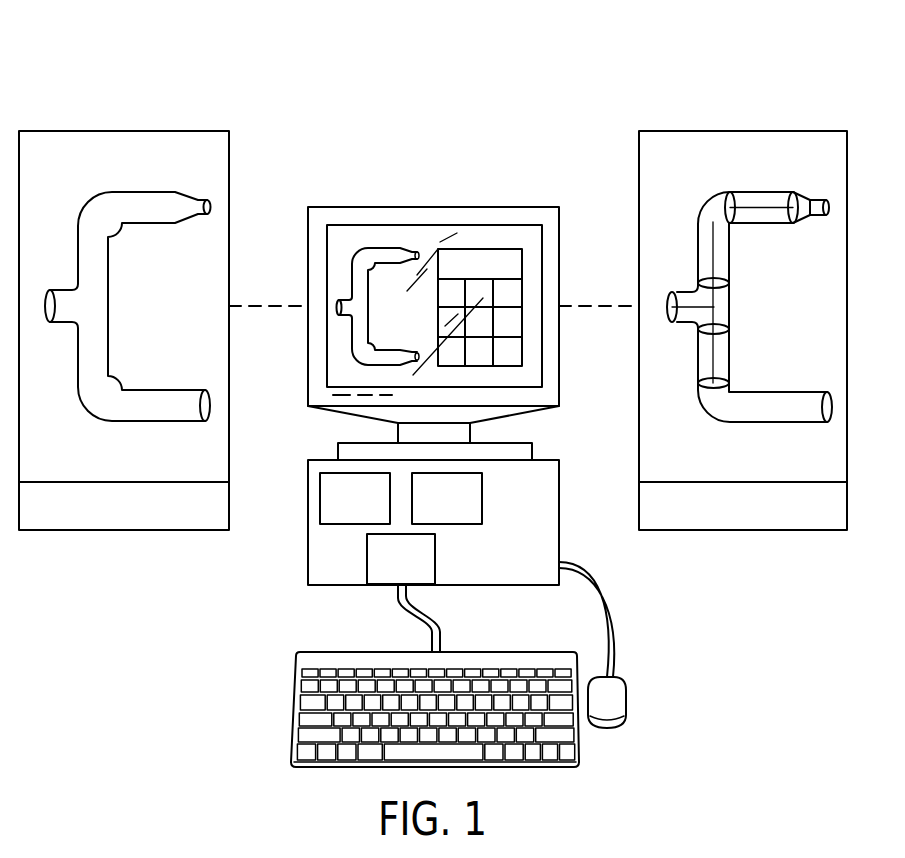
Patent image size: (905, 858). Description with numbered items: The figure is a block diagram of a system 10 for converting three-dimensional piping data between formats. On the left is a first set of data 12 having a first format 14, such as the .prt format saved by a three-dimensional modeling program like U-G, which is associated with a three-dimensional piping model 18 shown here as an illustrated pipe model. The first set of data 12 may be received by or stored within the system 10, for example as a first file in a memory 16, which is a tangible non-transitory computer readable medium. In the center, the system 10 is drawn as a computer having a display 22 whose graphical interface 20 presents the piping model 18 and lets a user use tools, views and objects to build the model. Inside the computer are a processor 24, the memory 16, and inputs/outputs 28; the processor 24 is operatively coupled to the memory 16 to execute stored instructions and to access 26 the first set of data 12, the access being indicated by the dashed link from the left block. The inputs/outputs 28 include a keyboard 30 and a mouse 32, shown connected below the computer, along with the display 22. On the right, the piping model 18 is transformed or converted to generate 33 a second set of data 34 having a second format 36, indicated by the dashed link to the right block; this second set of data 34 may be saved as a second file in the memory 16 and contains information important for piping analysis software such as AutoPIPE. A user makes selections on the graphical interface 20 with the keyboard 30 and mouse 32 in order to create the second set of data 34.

The system 10 is at (467, 431).
The first set of data 12 is at (152, 295).
The first format 14 is at (48, 515).
The memory 16 is at (482, 497).
The 3D piping model 18 is at (65, 150).
The graphical interface 20 is at (368, 232).
The display 22 is at (449, 300).
The processor 24 is at (320, 497).
The access 26 is at (277, 306).
The inputs/outputs 28 is at (367, 560).
The keyboard 30 is at (298, 703).
The mouse 32 is at (626, 697).
The generate 33 is at (590, 306).
The second set of data 34 is at (759, 301).
The second format 36 is at (666, 522).